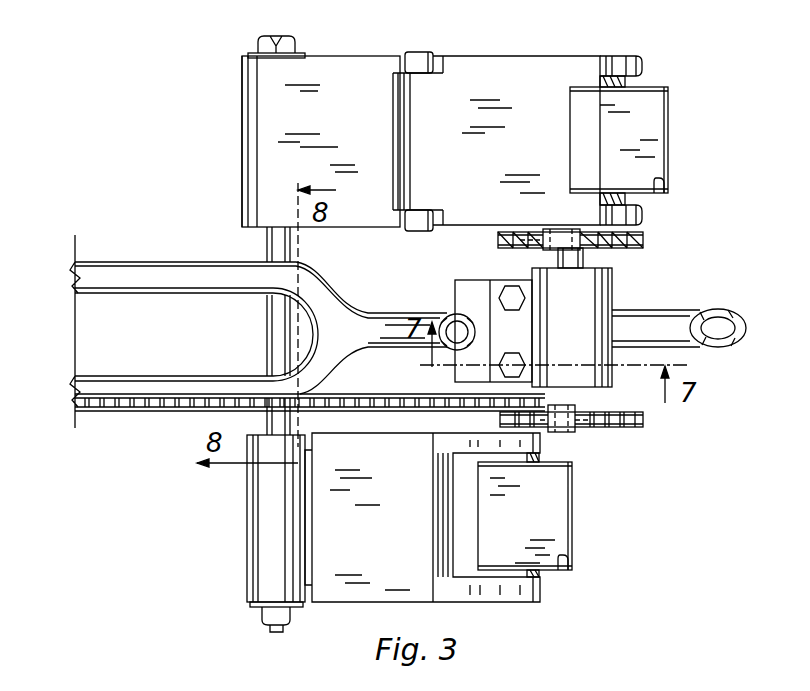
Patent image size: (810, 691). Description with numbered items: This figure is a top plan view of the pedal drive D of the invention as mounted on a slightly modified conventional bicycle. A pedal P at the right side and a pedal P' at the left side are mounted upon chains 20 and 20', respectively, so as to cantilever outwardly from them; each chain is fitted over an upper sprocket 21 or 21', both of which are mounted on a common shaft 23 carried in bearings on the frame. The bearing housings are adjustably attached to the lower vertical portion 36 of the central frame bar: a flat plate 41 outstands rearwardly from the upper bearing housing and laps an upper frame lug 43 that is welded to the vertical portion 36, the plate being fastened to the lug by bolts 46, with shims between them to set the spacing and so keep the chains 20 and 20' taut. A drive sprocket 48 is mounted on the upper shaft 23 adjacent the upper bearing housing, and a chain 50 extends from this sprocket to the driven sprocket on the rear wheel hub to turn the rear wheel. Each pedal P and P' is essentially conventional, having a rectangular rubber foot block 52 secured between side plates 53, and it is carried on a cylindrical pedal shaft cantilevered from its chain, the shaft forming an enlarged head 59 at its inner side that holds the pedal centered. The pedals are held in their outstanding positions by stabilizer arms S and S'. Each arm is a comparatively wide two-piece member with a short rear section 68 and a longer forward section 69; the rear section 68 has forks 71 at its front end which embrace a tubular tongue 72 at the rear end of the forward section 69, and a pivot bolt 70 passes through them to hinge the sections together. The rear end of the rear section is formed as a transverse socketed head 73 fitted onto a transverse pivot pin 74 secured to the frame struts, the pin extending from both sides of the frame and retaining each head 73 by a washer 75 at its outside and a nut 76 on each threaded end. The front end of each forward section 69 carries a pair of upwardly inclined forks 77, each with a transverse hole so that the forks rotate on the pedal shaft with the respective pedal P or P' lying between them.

The chain 20 is at (597, 421).
The chain 20' is at (568, 242).
The upper sprocket 21 is at (586, 430).
The upper sprocket 21' is at (553, 227).
The upper shaft 23 is at (556, 263).
The lower vertical portion of central brace bar 36 is at (450, 316).
The flat plate 41 is at (518, 328).
The upper frame lug 43 is at (462, 291).
The bolt 46 is at (522, 298).
The drive sprocket 48 is at (553, 378).
The chain 50 is at (160, 412).
The foot block 52 is at (650, 135).
The side plate 53 is at (666, 166).
The head 59 is at (628, 82).
The rear section 68 is at (340, 140).
The forward section 69 is at (522, 140).
The pivot bolt 70 is at (418, 52).
The forks 71 is at (405, 68).
The tubular tongue 72 is at (412, 160).
The socketed head 73 is at (252, 140).
The pivot pin 74 is at (276, 328).
The washer 75 is at (248, 55).
The nut 76 is at (262, 44).
The forks 77 is at (644, 66).
The pedal drive D is at (168, 217).
The pedal P is at (600, 520).
The pedal P' is at (695, 107).
The stabilizer arm S is at (327, 621).
The stabilizer arm S' is at (351, 43).